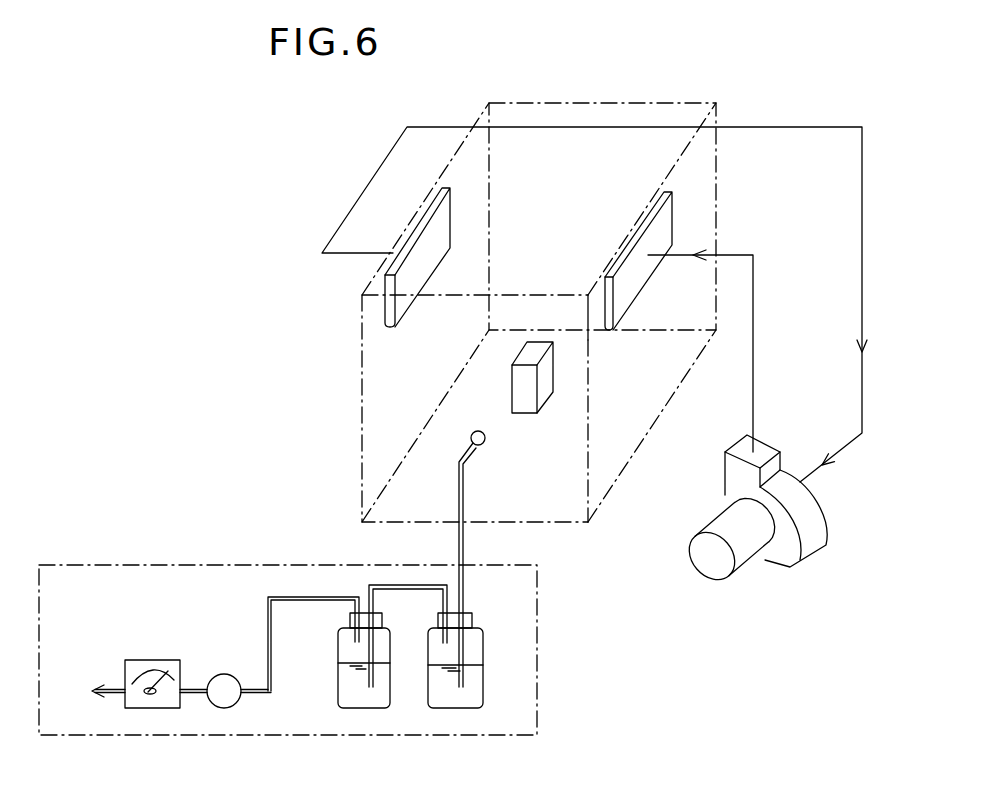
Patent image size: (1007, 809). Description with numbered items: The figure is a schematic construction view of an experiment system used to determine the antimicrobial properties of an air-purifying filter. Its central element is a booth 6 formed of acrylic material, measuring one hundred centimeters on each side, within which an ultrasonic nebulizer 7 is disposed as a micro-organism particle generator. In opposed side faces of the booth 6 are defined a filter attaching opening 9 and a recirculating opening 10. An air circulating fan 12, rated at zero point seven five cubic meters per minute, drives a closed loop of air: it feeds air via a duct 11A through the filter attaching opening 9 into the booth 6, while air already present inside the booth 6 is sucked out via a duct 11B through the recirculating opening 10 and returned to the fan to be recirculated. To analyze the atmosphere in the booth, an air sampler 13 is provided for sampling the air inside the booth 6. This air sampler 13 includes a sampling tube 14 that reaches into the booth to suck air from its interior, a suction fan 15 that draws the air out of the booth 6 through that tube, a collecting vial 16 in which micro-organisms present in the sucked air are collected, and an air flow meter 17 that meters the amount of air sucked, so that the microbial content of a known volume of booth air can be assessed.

The booth 6 is at (718, 112).
The ultrasonic nebulizer 7 is at (517, 380).
The filter attaching opening 9 is at (666, 214).
The recirculating opening 10 is at (383, 288).
The duct 11A is at (758, 348).
The duct 11B is at (864, 248).
The air circulating fan 12 is at (820, 510).
The air sampler 13 is at (157, 563).
The sampling tube 14 is at (464, 495).
The suction fan 15 is at (238, 700).
The collecting vial 16 is at (483, 683).
The air flow meter 17 is at (145, 660).